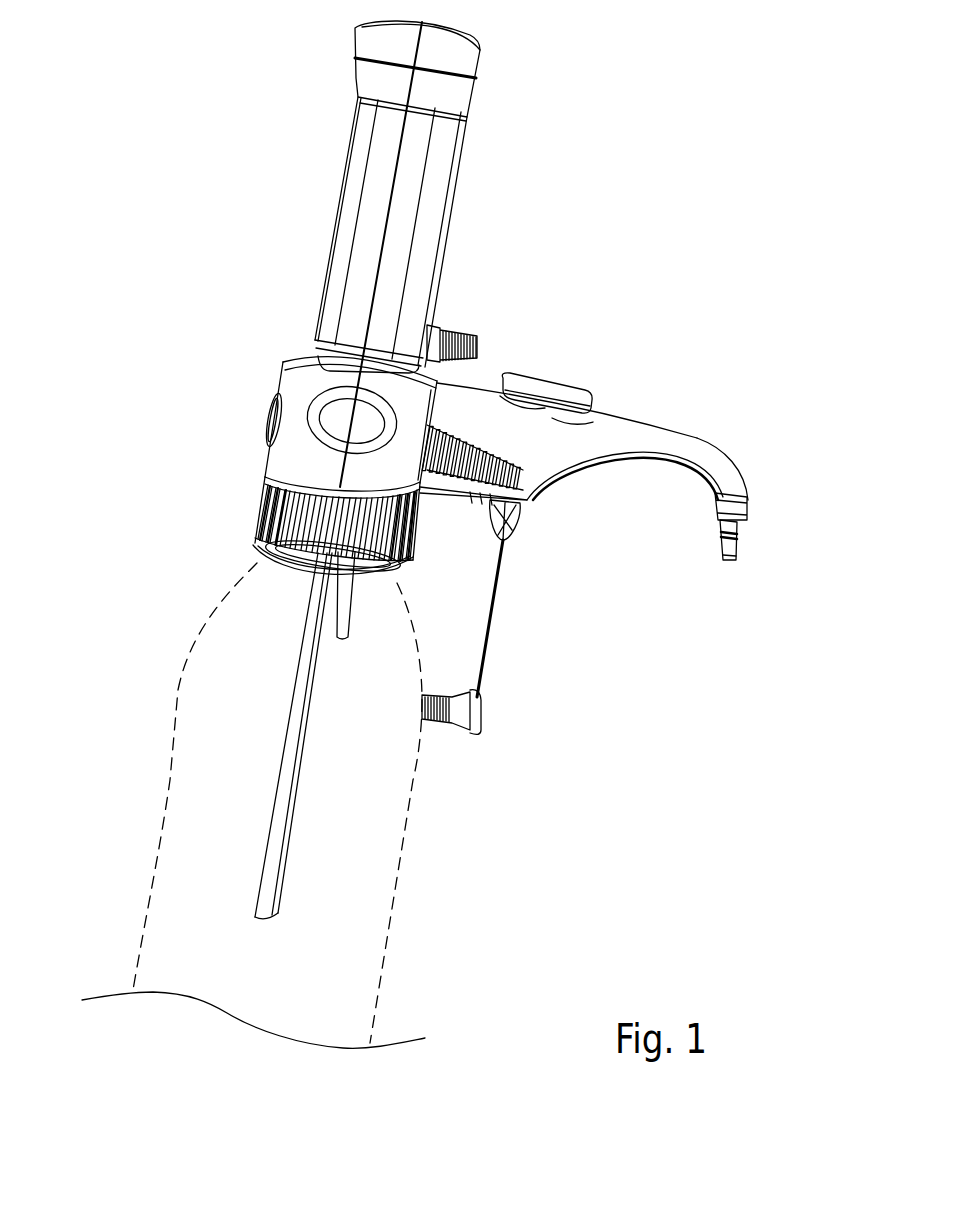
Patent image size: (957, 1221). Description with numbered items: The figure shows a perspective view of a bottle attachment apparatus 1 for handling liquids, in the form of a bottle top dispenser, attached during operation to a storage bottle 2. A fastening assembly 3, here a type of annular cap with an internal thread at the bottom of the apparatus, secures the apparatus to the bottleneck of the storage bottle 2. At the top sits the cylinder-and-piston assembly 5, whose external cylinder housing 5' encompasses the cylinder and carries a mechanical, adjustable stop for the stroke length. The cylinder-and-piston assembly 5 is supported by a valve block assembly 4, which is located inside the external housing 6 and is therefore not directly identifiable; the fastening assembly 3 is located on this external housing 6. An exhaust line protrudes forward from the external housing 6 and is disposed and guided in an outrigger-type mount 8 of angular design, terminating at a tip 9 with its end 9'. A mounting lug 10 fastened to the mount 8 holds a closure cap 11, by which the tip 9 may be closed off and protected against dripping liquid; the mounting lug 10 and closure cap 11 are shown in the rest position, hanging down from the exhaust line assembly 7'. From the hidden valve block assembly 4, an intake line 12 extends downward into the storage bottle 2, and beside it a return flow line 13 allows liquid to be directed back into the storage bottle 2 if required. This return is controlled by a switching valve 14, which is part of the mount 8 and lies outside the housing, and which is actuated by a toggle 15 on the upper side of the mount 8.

The bottle attachment apparatus 1 is at (562, 270).
The storage bottle 2 is at (180, 689).
The fastening assembly 3 is at (263, 497).
The valve block assembly 4 is at (233, 409).
The cylinder-and-piston assembly 5 is at (358, 197).
The cylinder housing 5' is at (334, 254).
The external housing 6 is at (295, 380).
The exhaust line assembly 7' is at (706, 419).
The mount 8 is at (626, 428).
The tip 9 is at (754, 523).
The nozzle tip 9' is at (752, 571).
The mounting lug 10 is at (497, 578).
The closure cap 11 is at (480, 711).
The intake line 12 is at (278, 797).
The return flow line 13 is at (343, 602).
The switching valve 14 is at (590, 490).
The toggle 15 is at (525, 382).